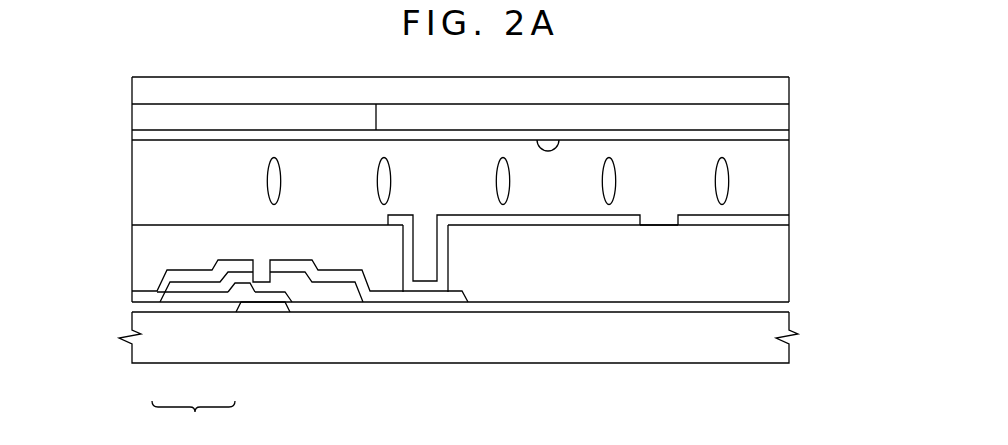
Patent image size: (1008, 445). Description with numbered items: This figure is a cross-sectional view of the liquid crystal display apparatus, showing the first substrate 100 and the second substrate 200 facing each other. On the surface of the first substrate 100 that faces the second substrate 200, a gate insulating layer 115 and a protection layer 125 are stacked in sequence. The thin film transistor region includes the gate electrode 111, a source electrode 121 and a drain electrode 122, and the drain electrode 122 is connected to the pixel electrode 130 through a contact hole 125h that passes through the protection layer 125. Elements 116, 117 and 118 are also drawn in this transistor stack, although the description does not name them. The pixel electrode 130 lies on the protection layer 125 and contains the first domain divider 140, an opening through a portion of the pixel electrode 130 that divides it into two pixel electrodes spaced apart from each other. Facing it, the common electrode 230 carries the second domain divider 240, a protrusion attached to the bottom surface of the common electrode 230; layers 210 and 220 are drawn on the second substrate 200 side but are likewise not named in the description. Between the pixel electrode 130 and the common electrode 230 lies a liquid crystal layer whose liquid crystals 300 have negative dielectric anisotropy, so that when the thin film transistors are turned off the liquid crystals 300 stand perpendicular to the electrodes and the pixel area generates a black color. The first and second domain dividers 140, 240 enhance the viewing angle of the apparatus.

The first substrate 100 is at (790, 350).
The gate electrode 111 is at (263, 306).
The gate insulating layer 115 is at (790, 302).
The thin film transistor 116 is at (193, 419).
The gate electrode 117 is at (220, 293).
The source/drain electrodes 118 is at (175, 285).
The source electrode 121 is at (132, 297).
The drain electrode 122 is at (379, 297).
The protection layer 125 is at (132, 245).
The contact hole 125h is at (439, 285).
The pixel electrode 130 is at (790, 216).
The first domain divider 140 is at (650, 225).
The second substrate 200 is at (790, 90).
The upper structure 210 is at (132, 117).
The color filter layer 220 is at (790, 116).
The common electrode 230 is at (790, 134).
The second domain divider 240 is at (548, 147).
The liquid crystals 300 is at (724, 187).